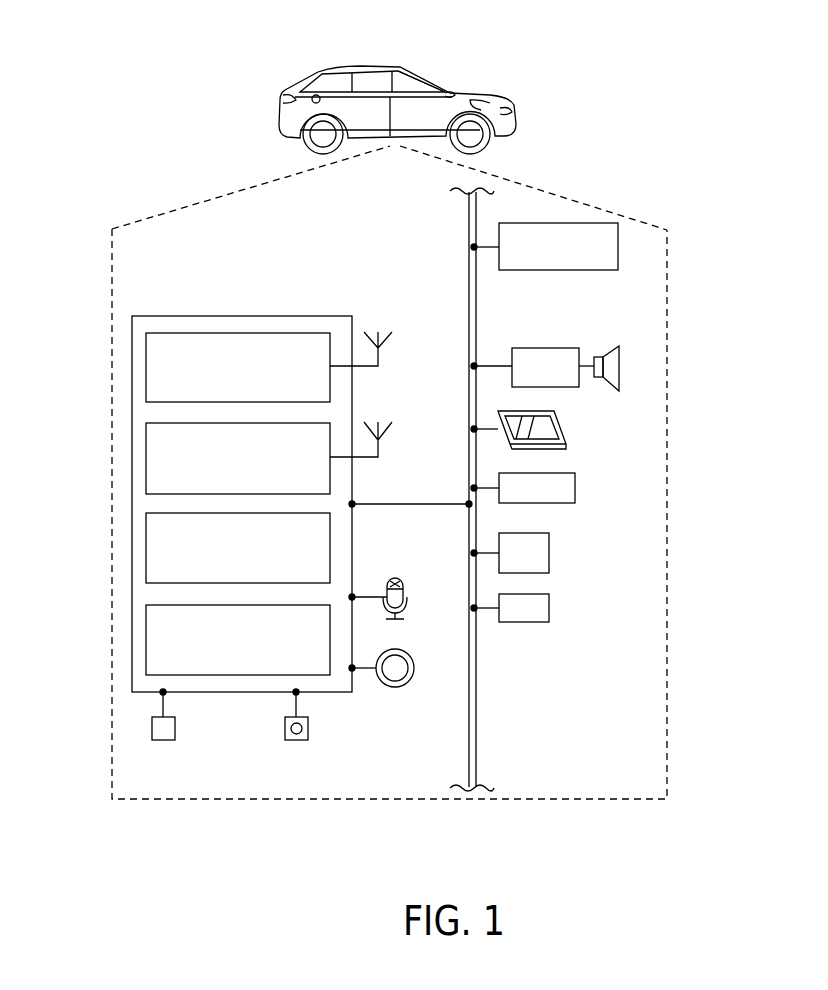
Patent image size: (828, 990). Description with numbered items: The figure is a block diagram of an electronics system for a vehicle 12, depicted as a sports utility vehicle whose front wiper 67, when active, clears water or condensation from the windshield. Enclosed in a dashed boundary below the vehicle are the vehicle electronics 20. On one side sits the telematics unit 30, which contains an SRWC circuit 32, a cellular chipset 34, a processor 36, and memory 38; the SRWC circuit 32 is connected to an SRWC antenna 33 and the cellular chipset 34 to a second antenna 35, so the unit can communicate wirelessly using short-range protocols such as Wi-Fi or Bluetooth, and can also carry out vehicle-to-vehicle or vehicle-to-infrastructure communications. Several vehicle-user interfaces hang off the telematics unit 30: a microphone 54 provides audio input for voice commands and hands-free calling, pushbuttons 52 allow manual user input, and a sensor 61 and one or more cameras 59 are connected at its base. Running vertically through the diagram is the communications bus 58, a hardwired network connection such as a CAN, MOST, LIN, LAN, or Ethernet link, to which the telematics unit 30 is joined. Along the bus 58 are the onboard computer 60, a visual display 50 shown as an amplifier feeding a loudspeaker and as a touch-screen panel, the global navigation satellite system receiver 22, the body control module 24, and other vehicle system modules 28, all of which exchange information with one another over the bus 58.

The vehicle 12 is at (414, 76).
The front wiper 67 is at (447, 89).
The vehicle electronics 20 is at (375, 802).
The telematics unit 30 is at (220, 315).
The SRWC circuit 32 is at (146, 372).
The cellular chipset 34 is at (146, 455).
The processor 36 is at (146, 550).
The memory 38 is at (146, 641).
The SRWC antenna 33 is at (381, 362).
The antenna 35 is at (381, 452).
The microphone 54 is at (397, 577).
The pushbutton 52 is at (408, 651).
The sensor 61 is at (176, 728).
The camera 59 is at (309, 728).
The communications bus 58 is at (468, 742).
The onboard computer 60 is at (533, 272).
The visual display 50 is at (553, 348).
The global navigation satellite system (GNSS) receiver 22 is at (578, 490).
The body control module 24 is at (551, 552).
The vehicle system modules 28 is at (551, 610).